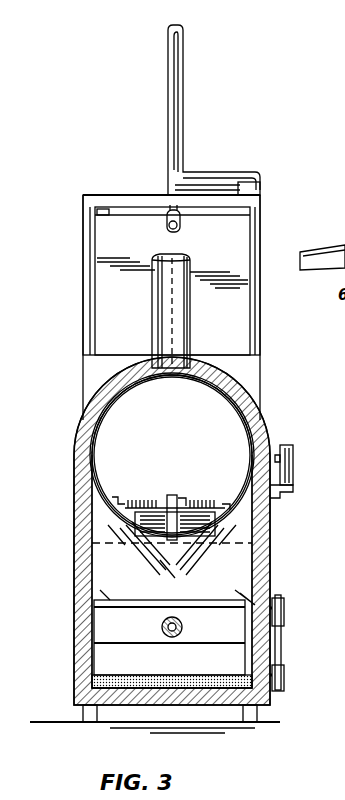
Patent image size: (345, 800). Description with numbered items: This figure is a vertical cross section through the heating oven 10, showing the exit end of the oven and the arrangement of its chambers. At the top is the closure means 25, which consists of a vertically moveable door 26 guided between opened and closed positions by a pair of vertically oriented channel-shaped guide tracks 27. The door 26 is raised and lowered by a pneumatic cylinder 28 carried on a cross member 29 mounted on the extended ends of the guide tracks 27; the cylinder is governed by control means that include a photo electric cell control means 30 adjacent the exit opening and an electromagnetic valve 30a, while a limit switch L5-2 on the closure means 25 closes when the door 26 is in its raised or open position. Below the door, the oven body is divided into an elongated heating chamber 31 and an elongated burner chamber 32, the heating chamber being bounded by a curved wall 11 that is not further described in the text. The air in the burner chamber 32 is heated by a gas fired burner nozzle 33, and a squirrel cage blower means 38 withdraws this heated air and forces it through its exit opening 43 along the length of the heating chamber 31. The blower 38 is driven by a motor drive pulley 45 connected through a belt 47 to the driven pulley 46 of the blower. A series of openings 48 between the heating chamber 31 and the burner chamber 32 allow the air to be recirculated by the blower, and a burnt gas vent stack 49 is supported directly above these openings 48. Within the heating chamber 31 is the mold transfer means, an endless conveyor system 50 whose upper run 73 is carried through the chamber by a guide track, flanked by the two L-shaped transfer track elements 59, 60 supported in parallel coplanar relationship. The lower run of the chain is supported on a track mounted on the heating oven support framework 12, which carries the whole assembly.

The heating oven 10 is at (271, 430).
The drum wall 11 is at (263, 416).
The heating oven support framework 12 is at (268, 718).
The closure means 25 is at (262, 240).
The vertically moveable door 26 is at (140, 326).
The channel-shaped guide tracks 27 is at (84, 335).
The pneumatic cylinder 28 is at (168, 116).
The cross member 29 is at (143, 193).
The photo electric cell control means 30 is at (294, 466).
The electromagnetic valve 30a is at (262, 188).
The heating chamber 31 is at (190, 441).
The burner chamber 32 is at (222, 582).
The burner nozzle 33 is at (170, 606).
The squirrel cage blower means 38 is at (105, 631).
The exit opening 43 is at (196, 512).
The drive pulley 45 is at (284, 675).
The driven pulley 46 is at (284, 605).
The belt 47 is at (283, 642).
The openings 48 is at (112, 496).
The burnt gas vent stack 49 is at (181, 338).
The endless conveyor system 50 is at (175, 488).
The transfer track element 59 is at (142, 498).
The transfer track element 60 is at (236, 502).
The upper run 73 is at (178, 502).
The limit switch L5-2 is at (100, 212).